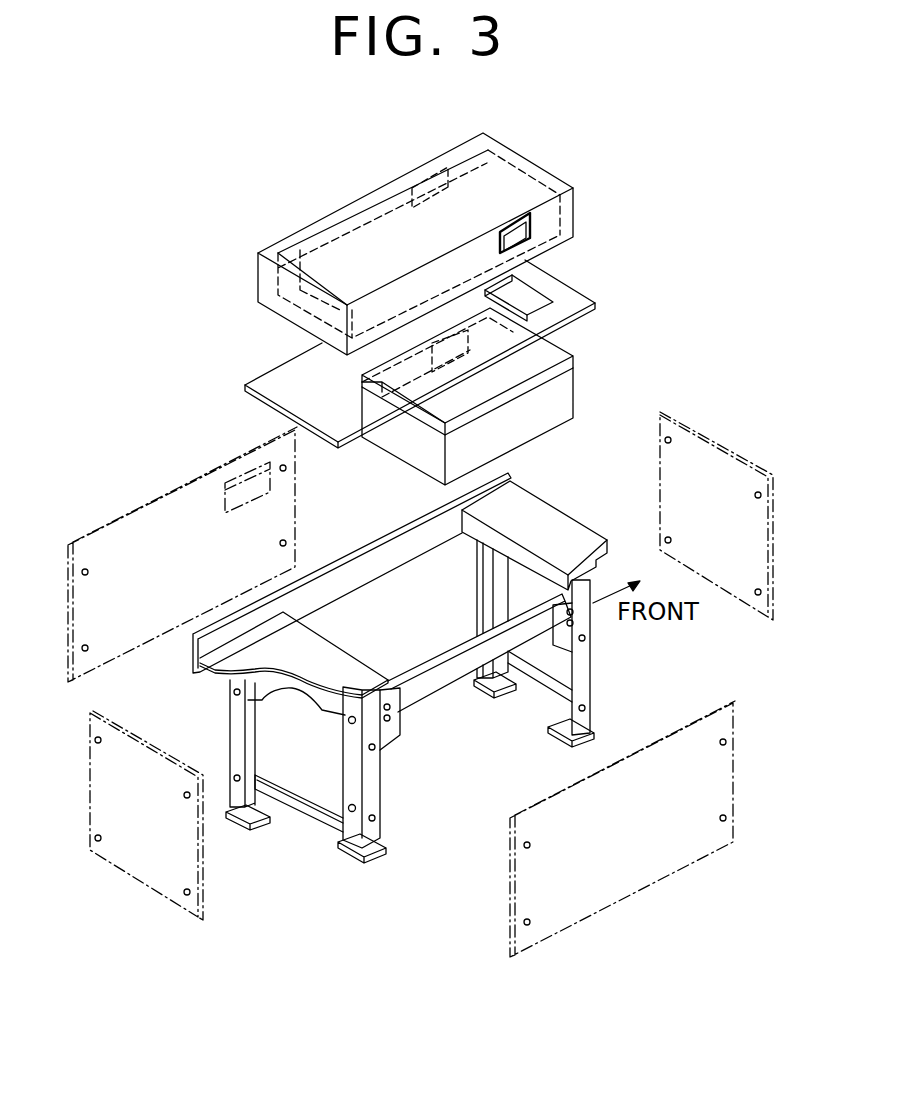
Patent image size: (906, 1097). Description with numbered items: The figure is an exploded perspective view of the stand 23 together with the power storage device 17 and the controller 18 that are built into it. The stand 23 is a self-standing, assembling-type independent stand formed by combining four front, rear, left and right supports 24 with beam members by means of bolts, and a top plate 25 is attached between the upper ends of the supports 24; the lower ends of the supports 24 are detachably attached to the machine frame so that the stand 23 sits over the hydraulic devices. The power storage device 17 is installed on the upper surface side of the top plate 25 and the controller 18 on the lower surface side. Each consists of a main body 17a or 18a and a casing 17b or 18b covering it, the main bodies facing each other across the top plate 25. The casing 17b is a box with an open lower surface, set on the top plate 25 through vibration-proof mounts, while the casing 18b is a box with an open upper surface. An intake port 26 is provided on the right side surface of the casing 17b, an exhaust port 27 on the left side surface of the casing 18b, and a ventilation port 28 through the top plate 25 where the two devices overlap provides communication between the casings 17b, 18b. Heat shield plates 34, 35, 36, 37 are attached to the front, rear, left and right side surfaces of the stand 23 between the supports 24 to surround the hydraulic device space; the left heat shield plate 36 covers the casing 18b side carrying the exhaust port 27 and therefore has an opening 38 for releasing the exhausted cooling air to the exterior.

The power storage device 17 is at (284, 168).
The main body of power storage device 17a is at (350, 232).
The casing of power storage device 17b is at (388, 181).
The controller 18 is at (633, 460).
The main body of controller 18a is at (518, 375).
The casing of controller 18b is at (512, 440).
The stand 23 is at (383, 531).
The supports 24 is at (477, 595).
The top plate 25 is at (260, 373).
The intake port 26 is at (513, 238).
The exhaust port 27 is at (452, 170).
The ventilation port 28 is at (528, 307).
The heat shield plate 34 is at (713, 438).
The heat shield plate 35 is at (202, 865).
The left heat shield plate 36 is at (160, 492).
The heat shield plate 37 is at (670, 880).
The opening 38 is at (240, 488).